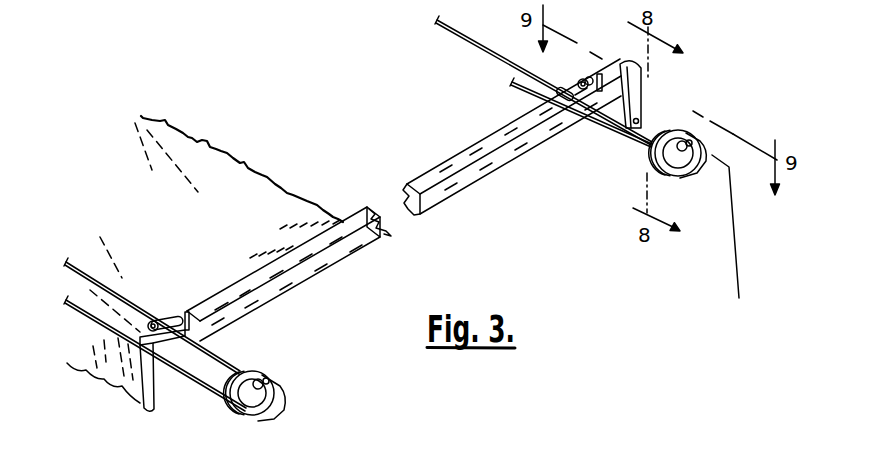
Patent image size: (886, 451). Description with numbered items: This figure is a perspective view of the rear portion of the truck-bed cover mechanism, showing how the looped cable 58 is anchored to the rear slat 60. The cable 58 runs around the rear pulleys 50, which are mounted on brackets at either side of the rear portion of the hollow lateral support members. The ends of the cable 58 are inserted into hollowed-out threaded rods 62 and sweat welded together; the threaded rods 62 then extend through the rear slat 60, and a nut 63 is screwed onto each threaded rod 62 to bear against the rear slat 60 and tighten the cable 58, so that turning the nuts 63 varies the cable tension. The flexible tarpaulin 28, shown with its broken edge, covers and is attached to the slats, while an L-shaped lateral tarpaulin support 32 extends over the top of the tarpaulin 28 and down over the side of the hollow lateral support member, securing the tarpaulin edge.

The flexible tarpaulin 28 is at (267, 178).
The L-shaped lateral tarpaulin support 32 is at (644, 108).
The rear pulley 50 is at (241, 415).
The looped cable 58 is at (217, 363).
The rear slat 60 is at (365, 205).
The threaded rod 62 is at (565, 88).
The nut 63 is at (585, 77).